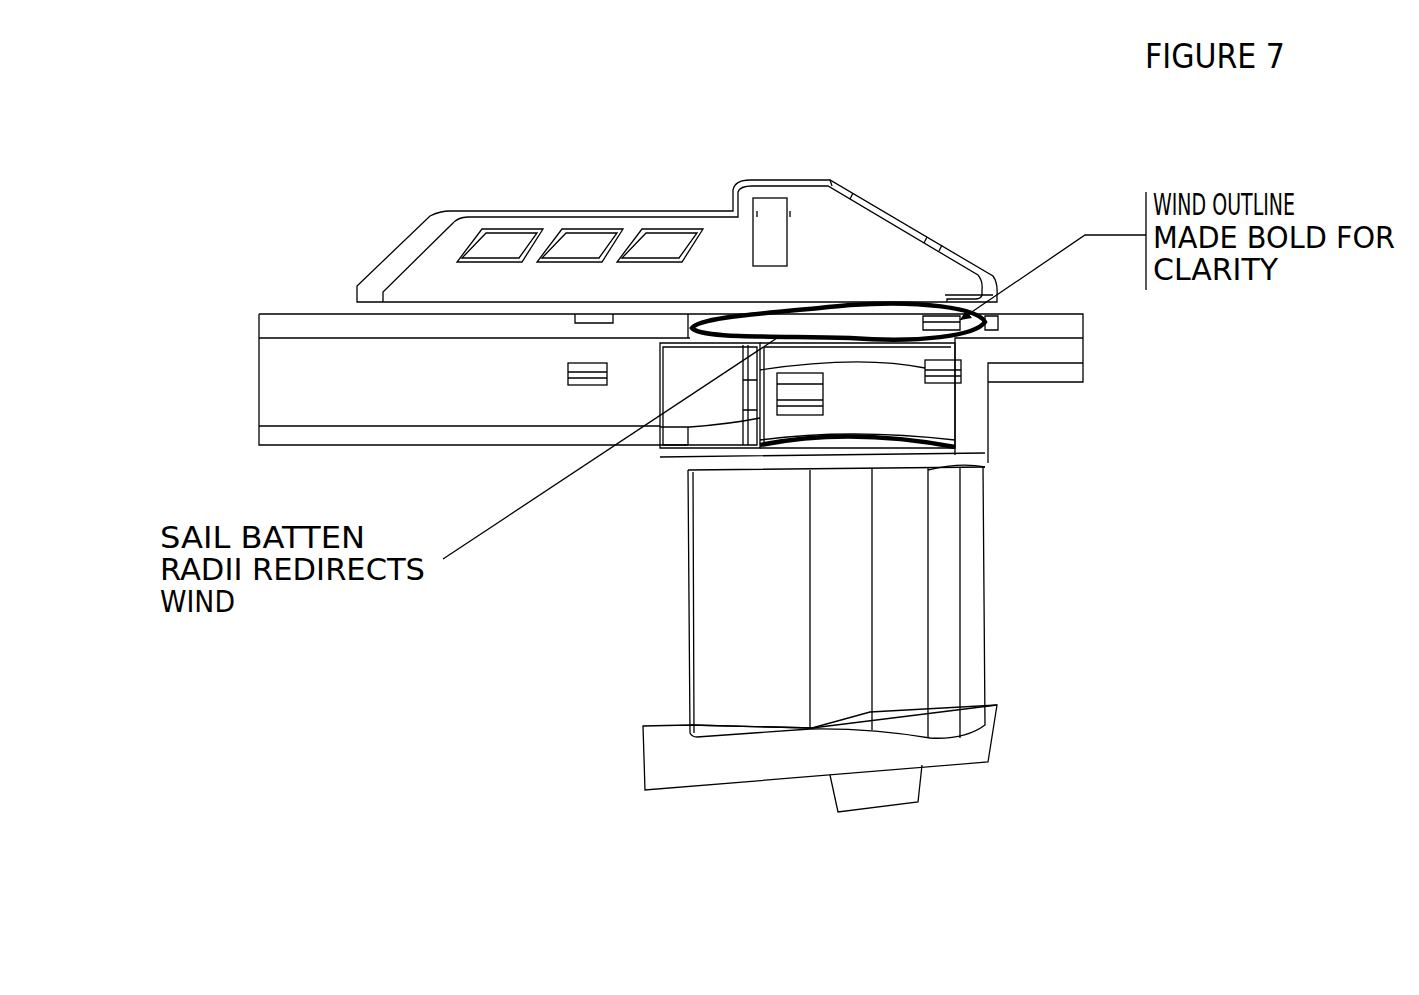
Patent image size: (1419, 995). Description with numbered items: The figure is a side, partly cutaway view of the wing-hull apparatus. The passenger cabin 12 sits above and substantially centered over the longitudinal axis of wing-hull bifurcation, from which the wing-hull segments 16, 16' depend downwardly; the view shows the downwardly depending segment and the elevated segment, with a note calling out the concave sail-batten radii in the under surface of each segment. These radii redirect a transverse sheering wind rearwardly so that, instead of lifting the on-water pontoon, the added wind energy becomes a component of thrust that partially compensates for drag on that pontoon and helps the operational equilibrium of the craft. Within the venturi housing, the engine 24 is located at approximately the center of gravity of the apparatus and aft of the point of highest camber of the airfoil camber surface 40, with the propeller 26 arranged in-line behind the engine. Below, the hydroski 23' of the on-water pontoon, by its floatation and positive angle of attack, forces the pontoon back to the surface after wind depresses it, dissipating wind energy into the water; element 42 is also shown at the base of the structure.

The passenger cabin 12 is at (505, 208).
The wing-hull segment 16 is at (671, 317).
The wing-hull segment 16' is at (889, 595).
The engine 24 is at (792, 410).
The propeller 26 is at (740, 413).
The airfoil camber surface 40 is at (912, 368).
The keel piece 42 is at (918, 805).
The hydroski 23' is at (820, 810).